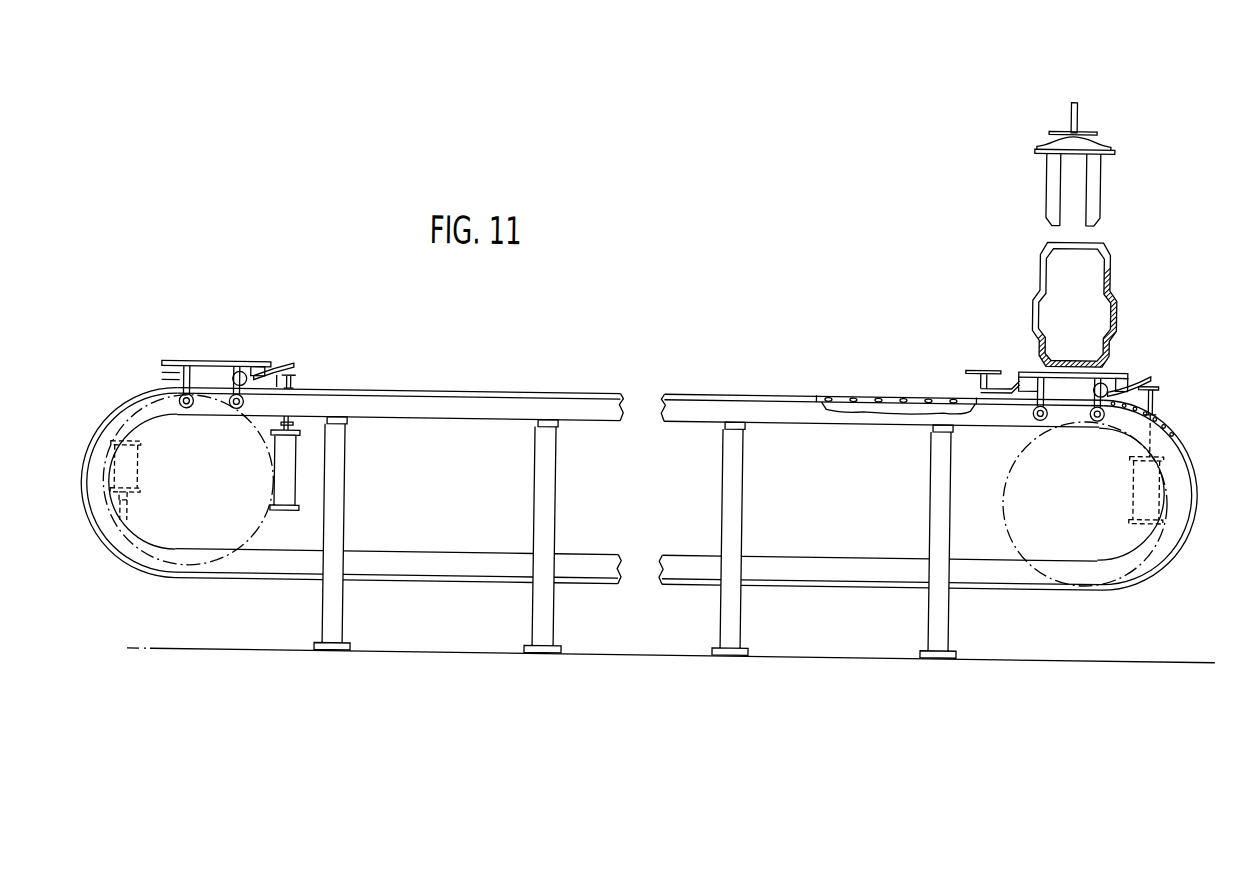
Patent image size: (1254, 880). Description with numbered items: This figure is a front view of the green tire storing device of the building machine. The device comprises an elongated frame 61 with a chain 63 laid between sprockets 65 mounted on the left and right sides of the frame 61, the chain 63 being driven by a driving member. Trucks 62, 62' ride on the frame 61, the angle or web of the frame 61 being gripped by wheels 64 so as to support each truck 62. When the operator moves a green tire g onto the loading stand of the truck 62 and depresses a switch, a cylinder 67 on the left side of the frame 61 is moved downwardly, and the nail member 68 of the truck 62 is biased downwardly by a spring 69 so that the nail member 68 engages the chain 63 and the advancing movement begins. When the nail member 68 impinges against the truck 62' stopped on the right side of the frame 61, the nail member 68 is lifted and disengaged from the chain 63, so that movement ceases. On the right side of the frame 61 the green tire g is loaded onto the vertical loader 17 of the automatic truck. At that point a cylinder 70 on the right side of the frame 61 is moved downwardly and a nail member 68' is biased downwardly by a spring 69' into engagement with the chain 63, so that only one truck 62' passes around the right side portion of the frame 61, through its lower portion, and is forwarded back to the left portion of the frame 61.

The vertical loader 17 is at (1093, 182).
The green tire g is at (1106, 262).
The frame 61 is at (514, 383).
The truck 62 is at (217, 349).
The truck 62' is at (1088, 354).
The chain 63 is at (883, 387).
The wheels 64 is at (1083, 367).
The sprockets 65 is at (245, 561).
The cylinder 67 is at (274, 468).
The nail member 68 is at (645, 359).
The nail member 68' is at (1154, 386).
The spring 69 is at (251, 352).
The spring 69' is at (1140, 364).
The cylinder 70 is at (1128, 474).